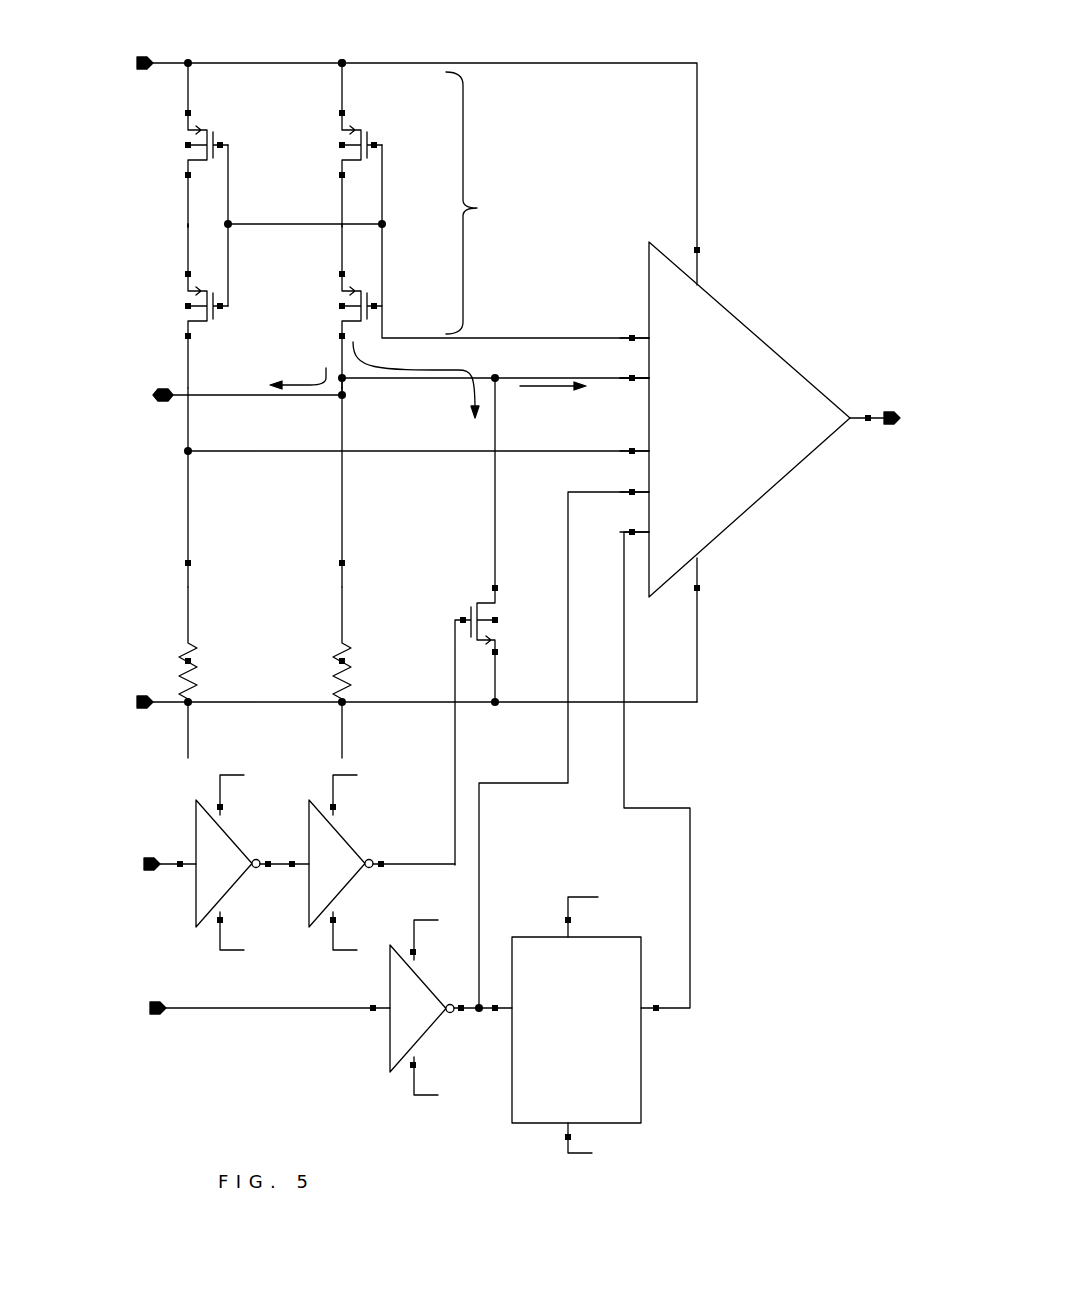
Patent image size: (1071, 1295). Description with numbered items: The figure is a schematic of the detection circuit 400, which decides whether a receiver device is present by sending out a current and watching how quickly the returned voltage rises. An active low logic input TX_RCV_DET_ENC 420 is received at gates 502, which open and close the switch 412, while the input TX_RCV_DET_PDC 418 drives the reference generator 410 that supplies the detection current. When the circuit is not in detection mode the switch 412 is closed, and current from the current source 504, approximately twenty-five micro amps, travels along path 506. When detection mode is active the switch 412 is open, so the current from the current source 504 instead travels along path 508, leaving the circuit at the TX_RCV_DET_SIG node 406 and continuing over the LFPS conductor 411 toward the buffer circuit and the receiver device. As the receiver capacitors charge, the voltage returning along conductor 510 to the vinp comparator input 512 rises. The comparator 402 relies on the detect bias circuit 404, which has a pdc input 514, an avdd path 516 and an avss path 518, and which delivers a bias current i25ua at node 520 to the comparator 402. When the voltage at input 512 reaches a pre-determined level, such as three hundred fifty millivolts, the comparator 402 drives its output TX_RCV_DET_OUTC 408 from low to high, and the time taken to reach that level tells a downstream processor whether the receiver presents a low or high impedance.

The detection circuit 400 is at (653, 38).
The comparator 402 is at (812, 470).
The detect bias circuit 404 is at (641, 1105).
The TX_RCV_DET_SIG node 406 is at (348, 394).
The comparator output TX_RCV_DET_OUTC 408 is at (875, 422).
The reference generator 410 is at (484, 203).
The LFPS conductor 411 is at (188, 405).
The switch 412 is at (478, 601).
The TX_RCV_DET_PDC input 418 is at (212, 1000).
The TX_RCV_DET_ENC input 420 is at (155, 875).
The gates 502 is at (305, 846).
The current source 504 is at (344, 62).
The current path 506 is at (395, 366).
The current path 508 is at (285, 378).
The voltage conductor 510 is at (548, 373).
The vinp comparator input 512 is at (630, 383).
The pdc input 514 is at (564, 764).
The avdd path 516 is at (582, 929).
The avss path 518 is at (587, 1139).
The i25ua node 520 is at (675, 1010).